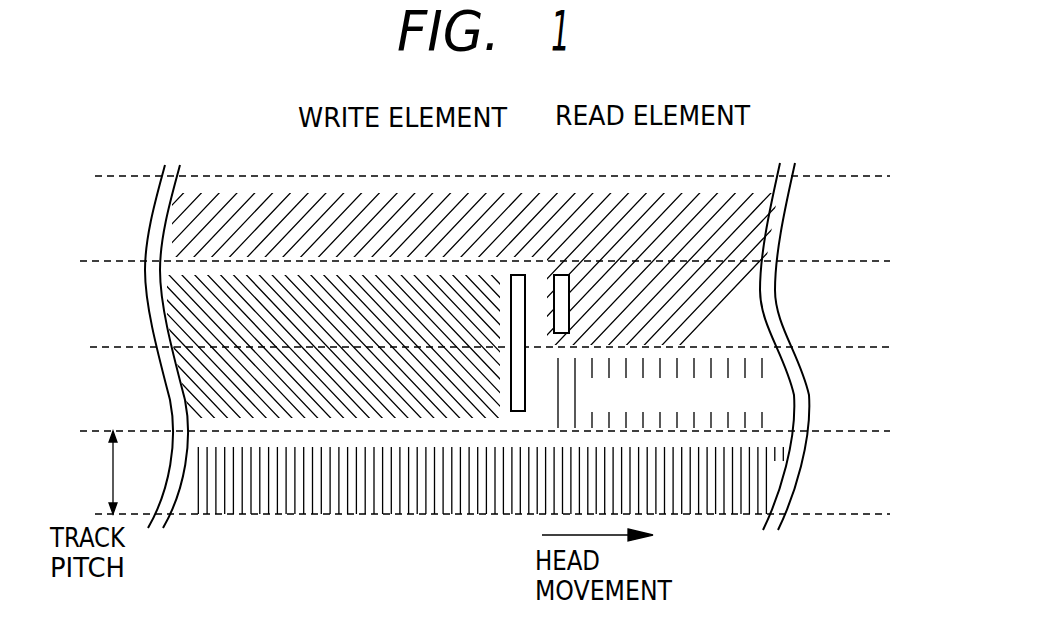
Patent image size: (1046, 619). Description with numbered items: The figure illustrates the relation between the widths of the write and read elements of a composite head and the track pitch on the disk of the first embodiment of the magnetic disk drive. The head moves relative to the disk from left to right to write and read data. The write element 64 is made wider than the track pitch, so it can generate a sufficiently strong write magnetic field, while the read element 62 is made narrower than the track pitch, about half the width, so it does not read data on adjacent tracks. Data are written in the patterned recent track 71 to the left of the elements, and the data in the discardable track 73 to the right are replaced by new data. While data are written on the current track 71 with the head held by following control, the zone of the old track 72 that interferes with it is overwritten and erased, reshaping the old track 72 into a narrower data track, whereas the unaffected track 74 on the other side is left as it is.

The read element 62 is at (562, 275).
The write element 64 is at (518, 275).
The recent track 71 is at (352, 346).
The recent write track 72 is at (423, 269).
The discardable track 73 is at (735, 393).
The unaffected track 74 is at (553, 480).